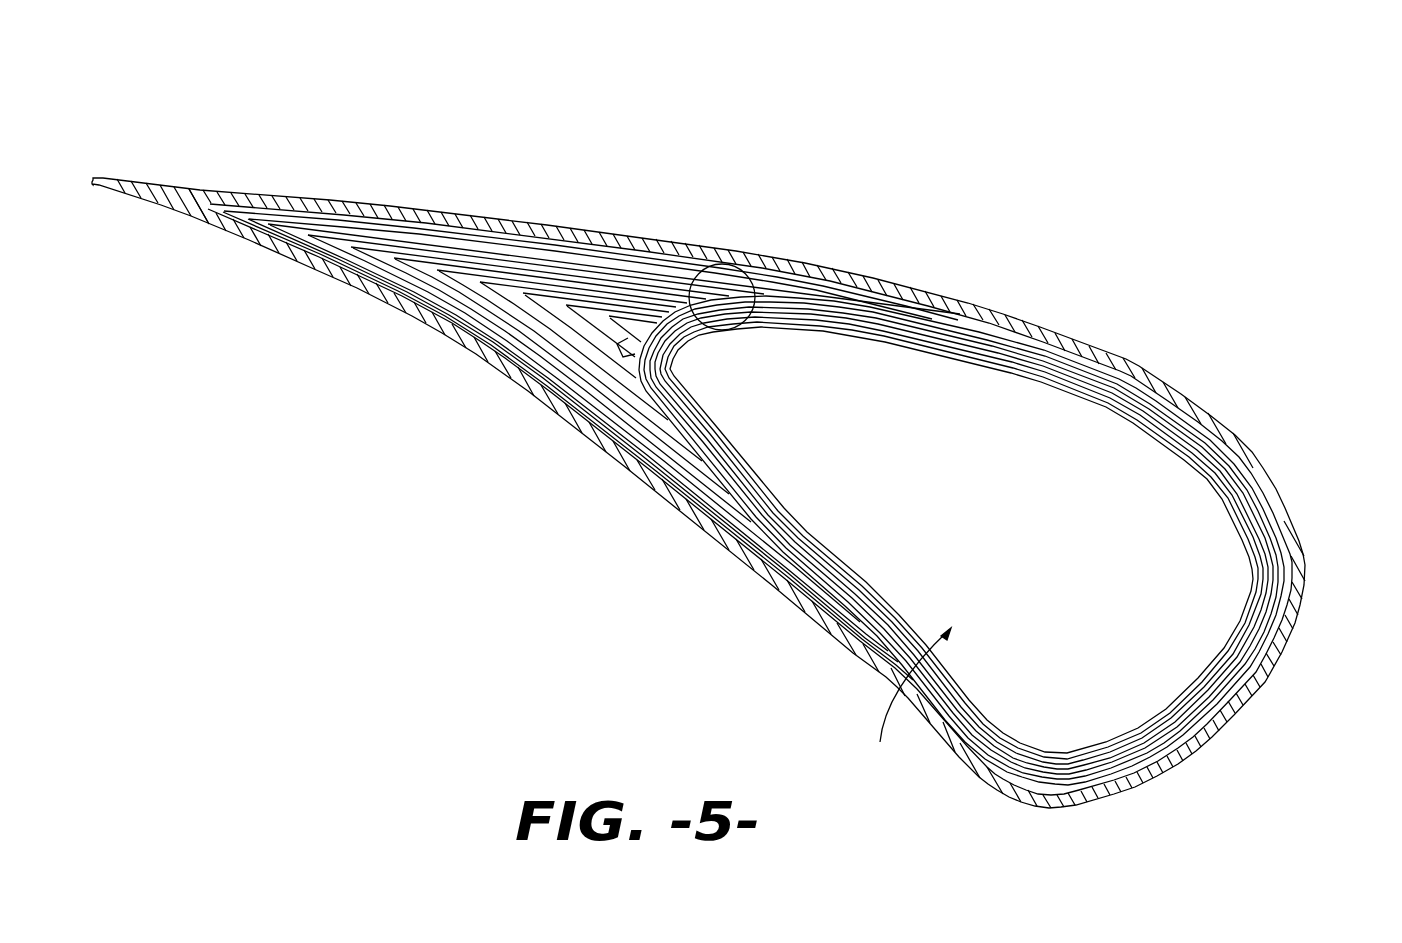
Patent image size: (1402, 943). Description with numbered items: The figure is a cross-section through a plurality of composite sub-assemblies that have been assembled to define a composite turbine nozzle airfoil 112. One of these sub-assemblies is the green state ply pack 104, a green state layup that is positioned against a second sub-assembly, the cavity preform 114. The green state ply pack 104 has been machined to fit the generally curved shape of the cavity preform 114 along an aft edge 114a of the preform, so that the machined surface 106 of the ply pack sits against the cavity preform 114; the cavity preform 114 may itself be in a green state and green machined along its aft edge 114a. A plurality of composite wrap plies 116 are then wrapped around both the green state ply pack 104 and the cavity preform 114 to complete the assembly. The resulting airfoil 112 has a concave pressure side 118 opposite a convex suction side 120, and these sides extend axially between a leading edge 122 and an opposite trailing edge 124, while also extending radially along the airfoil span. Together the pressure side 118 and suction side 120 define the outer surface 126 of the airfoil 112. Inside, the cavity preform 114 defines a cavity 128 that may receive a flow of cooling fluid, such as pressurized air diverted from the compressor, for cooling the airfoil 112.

The turbine nozzle airfoil 112 is at (296, 122).
The trailing edge 124 is at (85, 177).
The composite wrap plies 116 is at (414, 218).
The green state ply pack 104 is at (578, 277).
The machined surface 106 is at (758, 300).
The suction side 120 is at (901, 275).
The cavity preform 114 is at (1031, 380).
The aft edge 114a is at (640, 373).
The pressure side 118 is at (606, 450).
The outer surface 126 is at (770, 583).
The cavity 128 is at (899, 707).
The leading edge 122 is at (1243, 733).